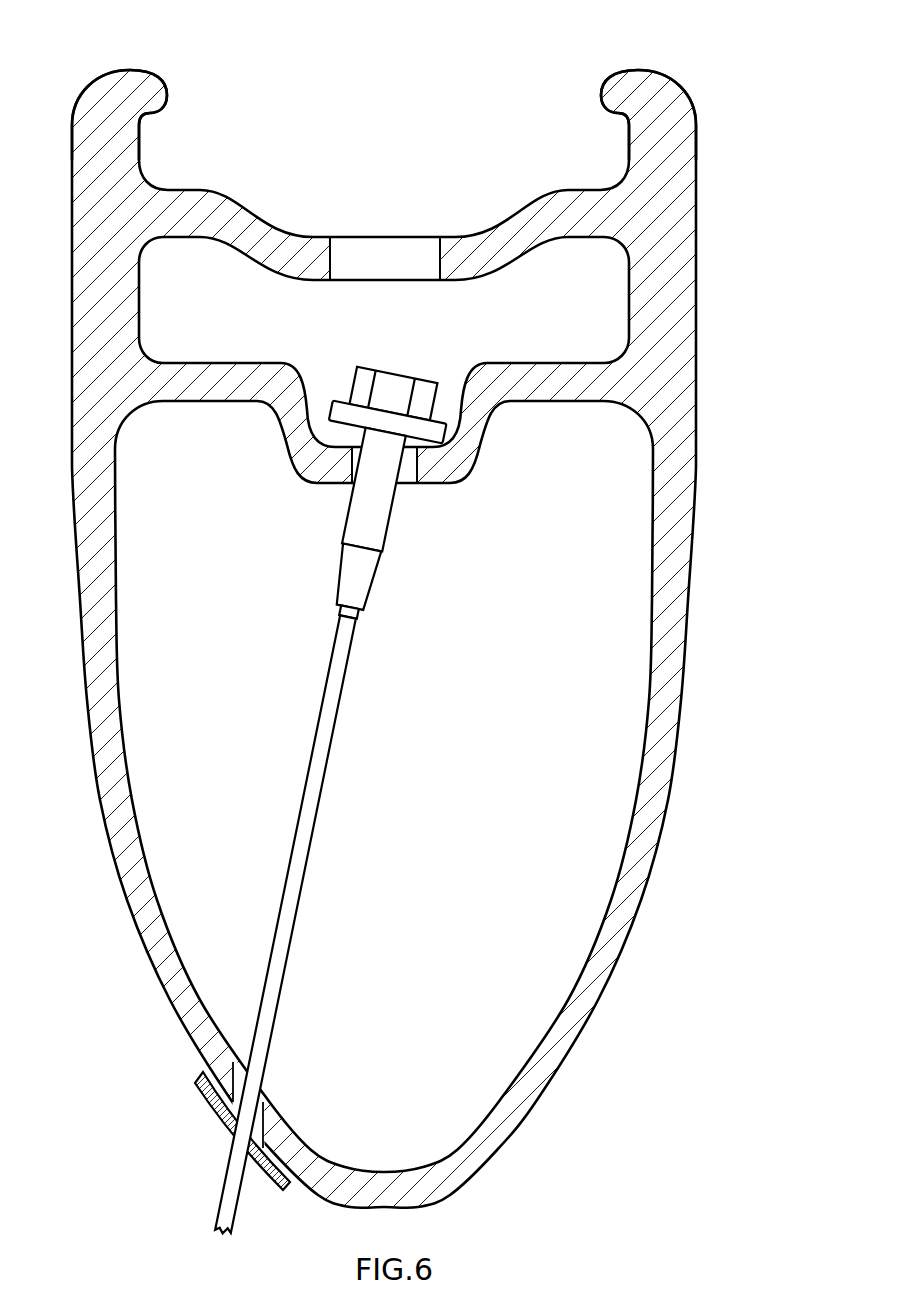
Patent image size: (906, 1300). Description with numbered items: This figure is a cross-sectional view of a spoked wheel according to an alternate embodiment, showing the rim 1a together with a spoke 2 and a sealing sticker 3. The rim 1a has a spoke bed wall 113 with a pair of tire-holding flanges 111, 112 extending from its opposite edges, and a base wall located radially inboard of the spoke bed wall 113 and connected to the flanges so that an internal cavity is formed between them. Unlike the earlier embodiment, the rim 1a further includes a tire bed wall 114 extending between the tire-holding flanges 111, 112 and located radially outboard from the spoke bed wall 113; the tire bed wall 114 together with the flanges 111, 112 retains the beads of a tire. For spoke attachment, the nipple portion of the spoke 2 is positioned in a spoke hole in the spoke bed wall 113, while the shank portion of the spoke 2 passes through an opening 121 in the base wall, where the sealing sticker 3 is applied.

The rim 1a is at (707, 93).
The tire-holding flange 111 is at (108, 157).
The tire-holding flange 112 is at (683, 155).
The spoke bed wall 113 is at (208, 393).
The tire bed wall 114 is at (208, 224).
The opening 121 is at (238, 1067).
The spoke 2 is at (340, 523).
The sealing sticker 3 is at (205, 1107).